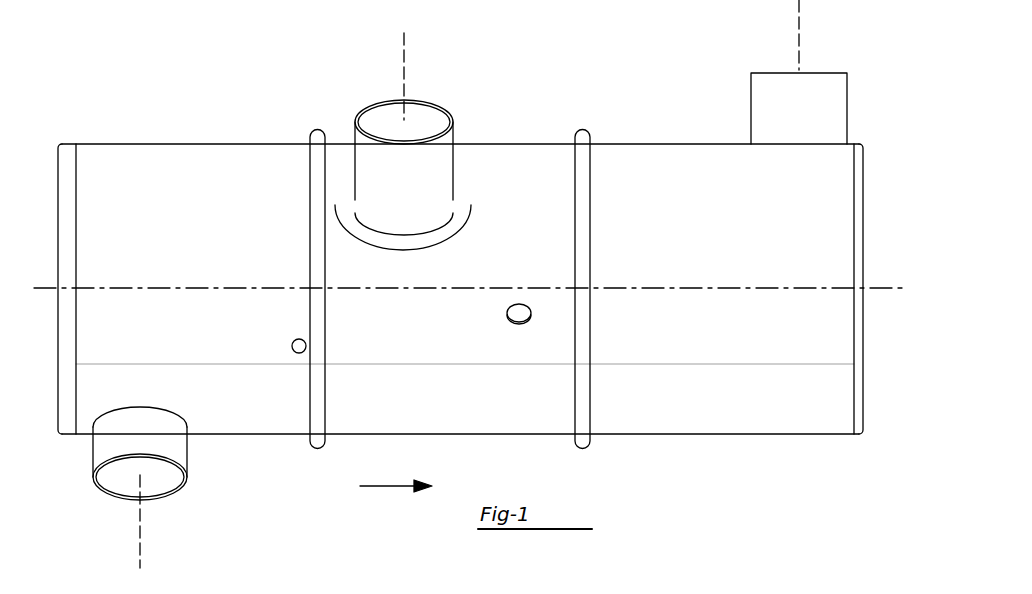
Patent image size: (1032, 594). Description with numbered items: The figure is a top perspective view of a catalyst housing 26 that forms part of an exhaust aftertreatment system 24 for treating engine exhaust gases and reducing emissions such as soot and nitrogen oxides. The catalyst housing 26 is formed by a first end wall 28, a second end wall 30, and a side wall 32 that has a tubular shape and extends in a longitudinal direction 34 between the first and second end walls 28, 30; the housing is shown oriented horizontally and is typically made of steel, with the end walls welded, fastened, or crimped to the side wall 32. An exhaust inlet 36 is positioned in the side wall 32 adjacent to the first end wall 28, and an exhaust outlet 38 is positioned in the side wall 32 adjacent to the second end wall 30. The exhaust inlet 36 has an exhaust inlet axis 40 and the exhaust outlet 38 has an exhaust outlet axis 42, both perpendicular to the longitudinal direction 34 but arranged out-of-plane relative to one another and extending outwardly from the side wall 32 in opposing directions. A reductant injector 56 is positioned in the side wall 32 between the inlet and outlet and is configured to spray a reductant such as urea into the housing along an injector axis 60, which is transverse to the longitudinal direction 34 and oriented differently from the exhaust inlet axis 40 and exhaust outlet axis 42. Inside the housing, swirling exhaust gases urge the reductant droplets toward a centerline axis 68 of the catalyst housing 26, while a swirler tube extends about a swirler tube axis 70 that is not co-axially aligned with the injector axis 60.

The exhaust aftertreatment system 24 is at (160, 56).
The catalyst housing 26 is at (56, 140).
The first end wall 28 is at (68, 231).
The second end wall 30 is at (858, 270).
The side wall 32 is at (202, 170).
The longitudinal direction 34 is at (385, 488).
The exhaust inlet 36 is at (178, 452).
The exhaust outlet 38 is at (766, 98).
The exhaust inlet axis 40 is at (140, 545).
The exhaust outlet axis 42 is at (760, 593).
The swirler tube axis 70 is at (760, 593).
The reductant injector 56 is at (437, 163).
The injector axis 60 is at (403, 50).
The centerline axis 68 is at (50, 290).